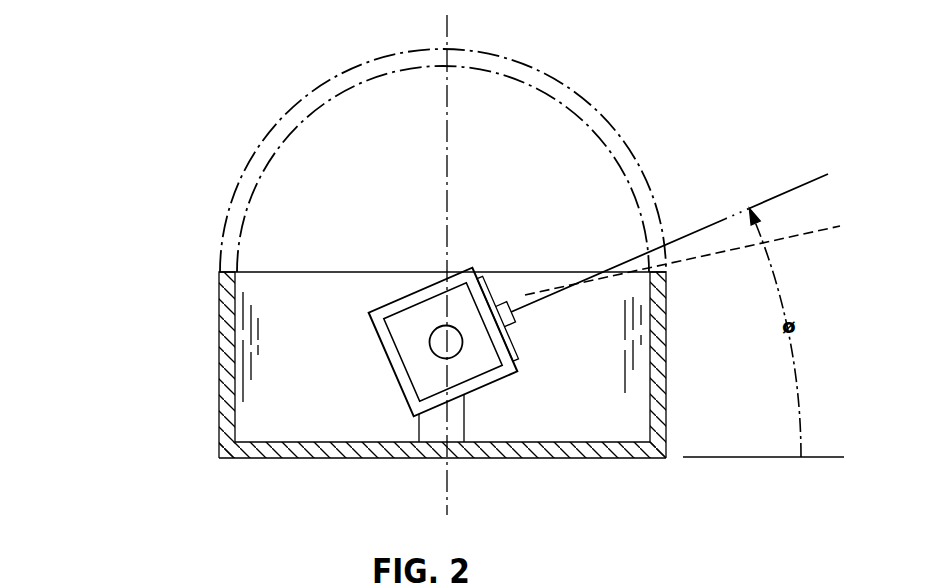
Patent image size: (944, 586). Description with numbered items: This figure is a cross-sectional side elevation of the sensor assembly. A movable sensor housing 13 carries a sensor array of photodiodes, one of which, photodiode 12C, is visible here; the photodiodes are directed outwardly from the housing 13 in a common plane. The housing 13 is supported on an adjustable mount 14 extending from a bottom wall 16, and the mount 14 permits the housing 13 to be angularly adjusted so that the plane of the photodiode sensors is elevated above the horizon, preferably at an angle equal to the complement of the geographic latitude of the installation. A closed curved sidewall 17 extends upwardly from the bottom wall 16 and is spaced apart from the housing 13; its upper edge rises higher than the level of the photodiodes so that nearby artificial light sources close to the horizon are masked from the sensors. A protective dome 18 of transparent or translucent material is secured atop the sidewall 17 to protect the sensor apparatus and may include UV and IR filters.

The protective dome 18 is at (268, 137).
The sidewall 17 is at (219, 320).
The bottom wall 16 is at (615, 458).
The adjustable mount 14 is at (453, 422).
The sensor housing 13 is at (420, 372).
The photodiode 12C is at (440, 352).